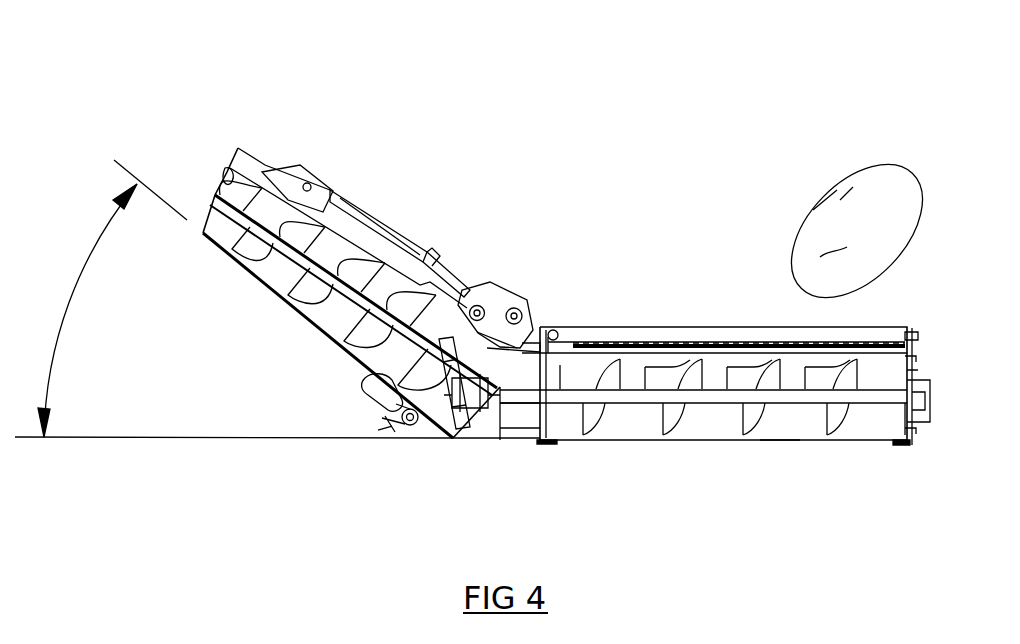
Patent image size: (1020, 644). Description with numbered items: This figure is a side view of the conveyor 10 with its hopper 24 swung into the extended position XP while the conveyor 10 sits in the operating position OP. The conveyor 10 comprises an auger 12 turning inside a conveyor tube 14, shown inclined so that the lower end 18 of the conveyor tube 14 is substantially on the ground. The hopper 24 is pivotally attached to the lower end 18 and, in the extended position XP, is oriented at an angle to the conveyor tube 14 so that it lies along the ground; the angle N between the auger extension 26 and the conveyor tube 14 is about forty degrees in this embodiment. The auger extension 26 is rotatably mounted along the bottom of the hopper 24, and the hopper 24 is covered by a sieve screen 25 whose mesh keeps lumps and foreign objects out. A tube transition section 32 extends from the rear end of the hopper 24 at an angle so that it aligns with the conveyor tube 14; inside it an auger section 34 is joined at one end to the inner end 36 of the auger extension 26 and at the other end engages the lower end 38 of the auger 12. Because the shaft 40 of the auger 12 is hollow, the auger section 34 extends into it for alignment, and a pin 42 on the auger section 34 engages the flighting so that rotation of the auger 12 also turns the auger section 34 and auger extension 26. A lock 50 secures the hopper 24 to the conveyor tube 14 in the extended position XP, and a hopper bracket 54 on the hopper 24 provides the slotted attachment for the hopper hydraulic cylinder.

The conveyor 10 is at (300, 288).
The auger 12 is at (295, 178).
The conveyor tube 14 is at (223, 192).
The lower end of the conveyor tube 18 is at (360, 342).
The hopper 24 is at (830, 440).
The sieve screen 25 is at (760, 328).
The auger extension 26 is at (613, 440).
The tube transition section 32 is at (440, 422).
The auger section 34 is at (548, 332).
The inner end of the auger extension 36 is at (512, 440).
The lower end of the auger 38 is at (358, 378).
The shaft 40 is at (228, 180).
The pin 42 is at (473, 310).
The lock 50 is at (362, 408).
The hopper bracket 54 is at (520, 310).
The angle N is at (87, 310).
The operating position OP is at (345, 290).
The extended position XP is at (780, 443).